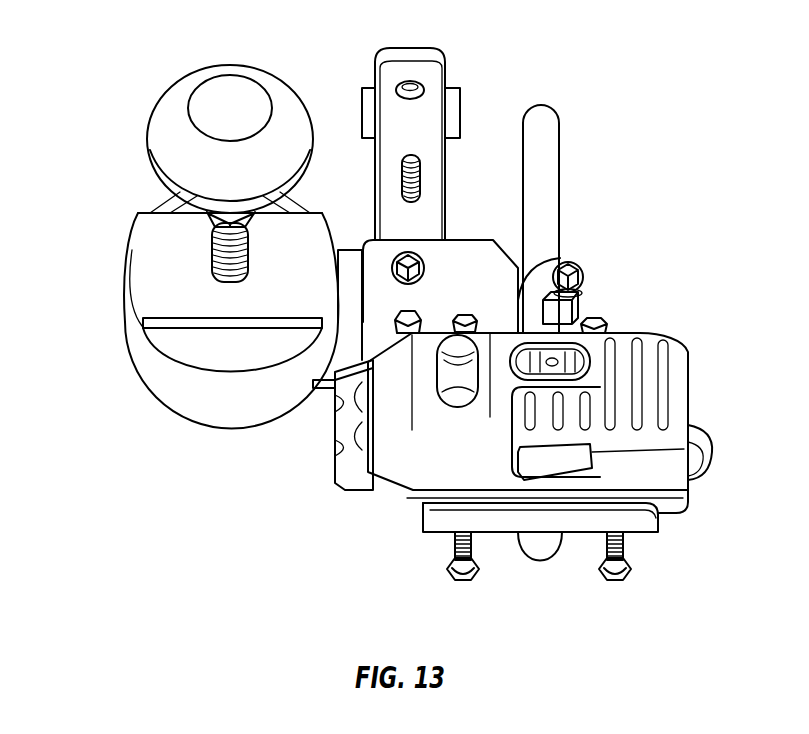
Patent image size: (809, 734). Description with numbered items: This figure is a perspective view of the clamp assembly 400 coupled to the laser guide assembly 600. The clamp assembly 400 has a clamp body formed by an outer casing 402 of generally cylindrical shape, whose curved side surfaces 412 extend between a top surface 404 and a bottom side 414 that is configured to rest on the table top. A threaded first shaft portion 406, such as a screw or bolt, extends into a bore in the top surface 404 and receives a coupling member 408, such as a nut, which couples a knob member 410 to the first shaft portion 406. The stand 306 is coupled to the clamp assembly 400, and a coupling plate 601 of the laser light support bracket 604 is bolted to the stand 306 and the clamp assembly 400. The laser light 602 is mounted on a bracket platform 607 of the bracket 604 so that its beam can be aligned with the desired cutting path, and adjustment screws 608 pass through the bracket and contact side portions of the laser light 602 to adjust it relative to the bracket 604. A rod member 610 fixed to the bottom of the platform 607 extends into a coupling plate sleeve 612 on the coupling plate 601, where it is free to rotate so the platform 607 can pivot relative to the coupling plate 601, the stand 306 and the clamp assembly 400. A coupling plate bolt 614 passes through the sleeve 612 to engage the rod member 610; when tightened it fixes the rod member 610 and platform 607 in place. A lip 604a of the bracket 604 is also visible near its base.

The clamp assembly 400 is at (128, 60).
The outer casing 402 is at (148, 300).
The top surface 404 is at (313, 283).
The first shaft portion 406 is at (212, 250).
The coupling member 408 is at (190, 211).
The knob member 410 is at (186, 83).
The side surfaces 412 is at (248, 408).
The bottom side 414 is at (354, 248).
The stand 306 is at (432, 84).
The laser guide assembly 600 is at (667, 160).
The coupling plate 601 is at (465, 249).
The laser light 602 is at (646, 344).
The laser light support bracket 604 is at (655, 522).
The base plate lip 604a is at (412, 503).
The bracket platform 607 is at (344, 470).
The adjustment screws 608 is at (465, 318).
The rod member 610 is at (554, 133).
The coupling plate sleeve 612 is at (545, 262).
The coupling plate bolt 614 is at (579, 273).